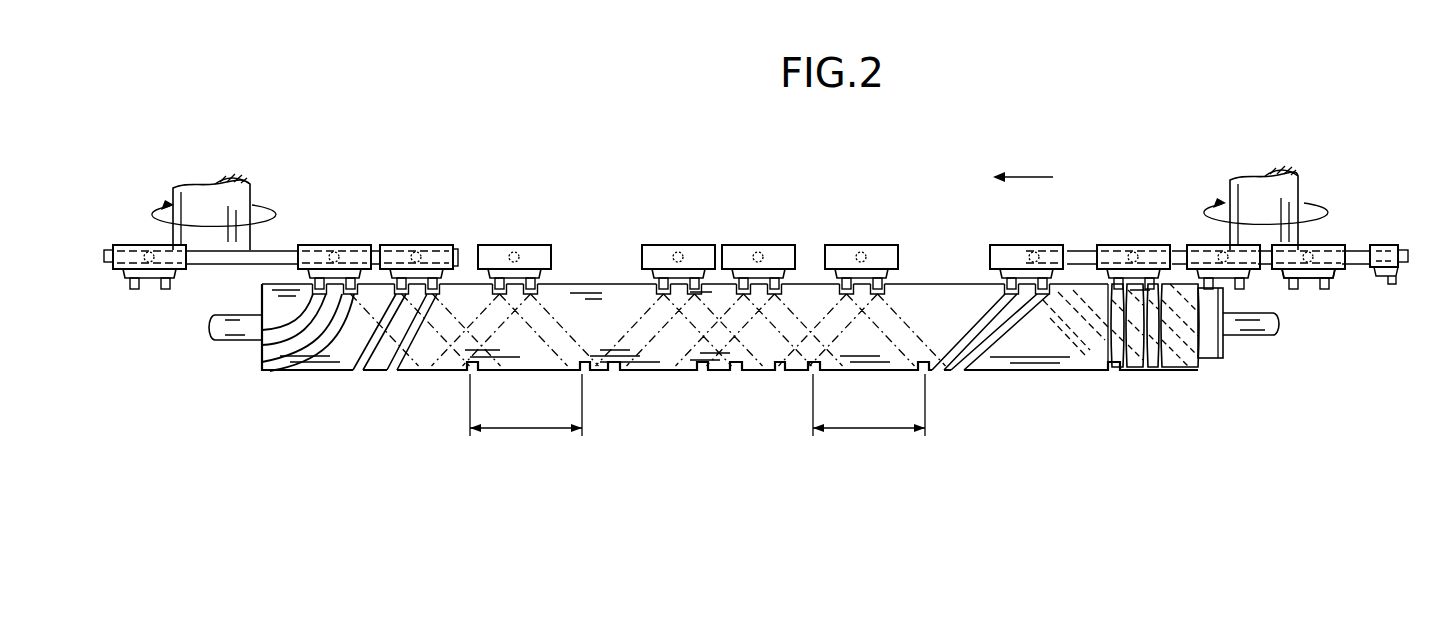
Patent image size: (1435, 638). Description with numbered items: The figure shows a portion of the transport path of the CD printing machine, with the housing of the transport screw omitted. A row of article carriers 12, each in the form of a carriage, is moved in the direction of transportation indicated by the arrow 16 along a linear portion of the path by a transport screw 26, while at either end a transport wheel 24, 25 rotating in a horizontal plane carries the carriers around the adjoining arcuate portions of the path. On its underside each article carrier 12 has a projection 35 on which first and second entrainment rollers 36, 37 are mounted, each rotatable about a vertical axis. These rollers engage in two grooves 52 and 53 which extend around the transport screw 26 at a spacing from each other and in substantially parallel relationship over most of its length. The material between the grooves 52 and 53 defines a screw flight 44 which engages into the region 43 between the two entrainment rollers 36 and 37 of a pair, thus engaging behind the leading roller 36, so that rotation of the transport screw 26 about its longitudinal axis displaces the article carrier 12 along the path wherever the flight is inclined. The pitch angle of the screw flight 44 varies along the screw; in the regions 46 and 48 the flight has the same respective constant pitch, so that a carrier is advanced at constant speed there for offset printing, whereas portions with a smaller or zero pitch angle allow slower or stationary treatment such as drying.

The article carrier 12 is at (665, 236).
The arrow indicating direction of transportation 16 is at (1037, 173).
The transport wheel 24 is at (208, 262).
The transport wheel 25 is at (1085, 250).
The transport screw 26 is at (660, 355).
The projection 35 is at (873, 270).
The first entrainment roller 36 is at (495, 281).
The second entrainment roller 37 is at (530, 281).
The region between the entrainment rollers 43 is at (522, 283).
The screw flight 44 is at (884, 293).
The region of constant pitch 46 is at (869, 405).
The region of constant pitch 48 is at (526, 405).
The groove 52 is at (282, 317).
The groove 53 is at (293, 345).